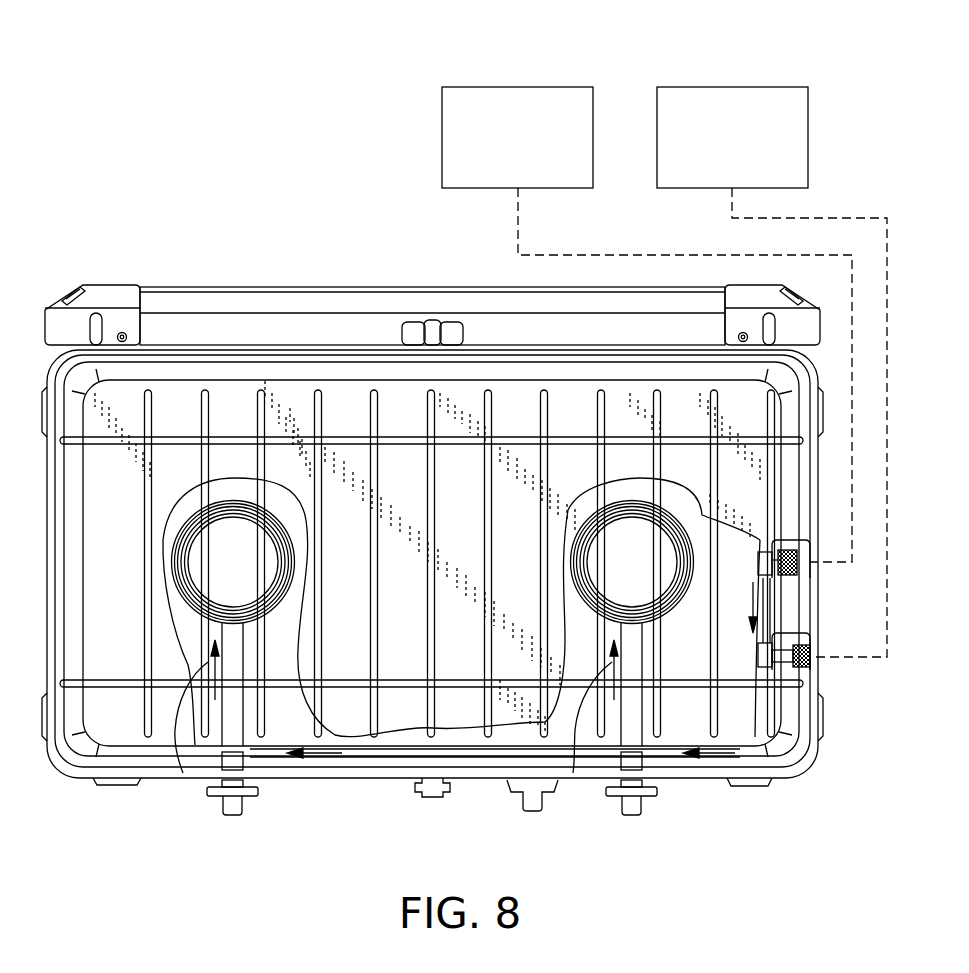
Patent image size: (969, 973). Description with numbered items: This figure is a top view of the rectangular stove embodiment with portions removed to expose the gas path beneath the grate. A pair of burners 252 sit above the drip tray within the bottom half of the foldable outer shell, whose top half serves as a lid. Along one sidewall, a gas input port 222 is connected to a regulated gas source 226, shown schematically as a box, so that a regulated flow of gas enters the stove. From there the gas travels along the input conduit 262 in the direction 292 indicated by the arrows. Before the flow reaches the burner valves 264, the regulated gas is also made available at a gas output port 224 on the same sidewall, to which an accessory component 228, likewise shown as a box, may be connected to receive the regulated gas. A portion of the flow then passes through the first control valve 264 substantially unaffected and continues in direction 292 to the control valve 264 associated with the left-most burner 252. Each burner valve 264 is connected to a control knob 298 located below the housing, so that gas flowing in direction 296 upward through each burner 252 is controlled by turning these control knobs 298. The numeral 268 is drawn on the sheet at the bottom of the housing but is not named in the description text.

The gas input port 222 is at (762, 540).
The gas output port 224 is at (823, 672).
The regulated gas source 226 is at (492, 87).
The accessory component 228 is at (690, 87).
The burner 252 is at (200, 548).
The input conduit 262 is at (758, 753).
The burner valve 264 is at (245, 650).
The base / bottom housing 268 is at (402, 762).
The direction 292 is at (753, 597).
The direction 296 is at (183, 773).
The control knob 298 is at (233, 815).